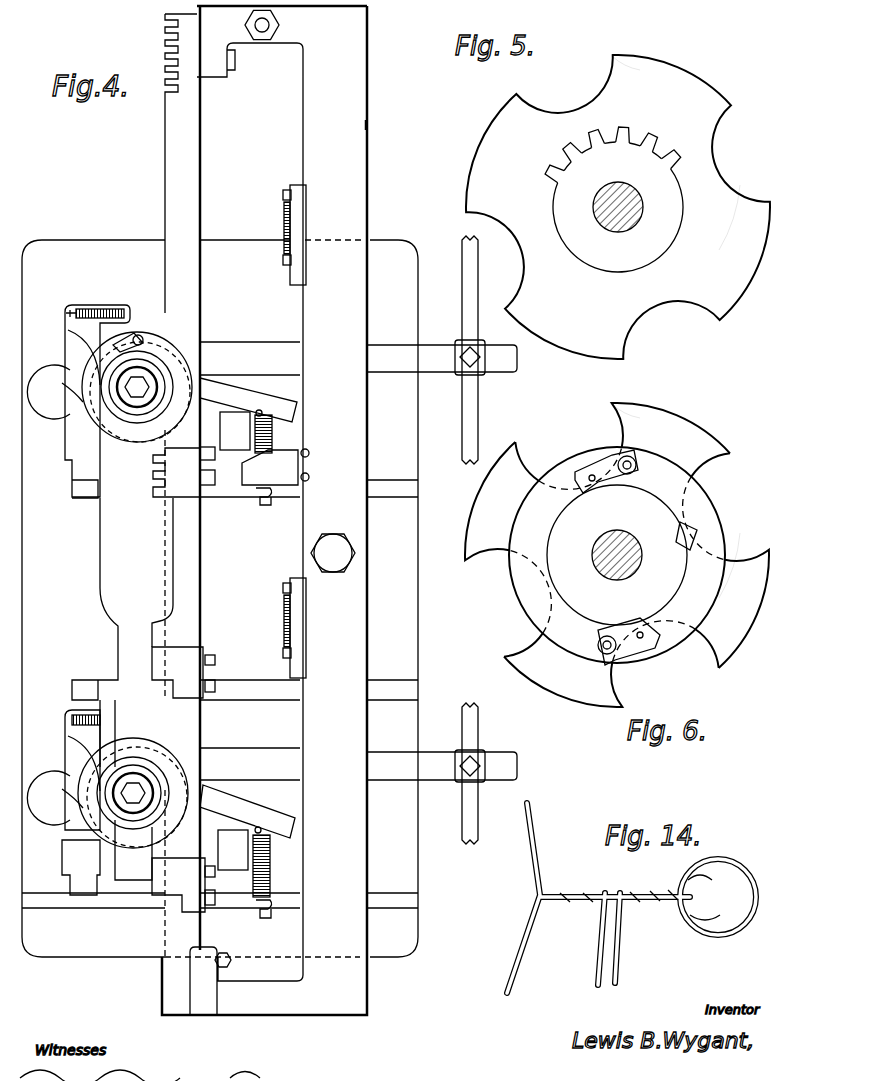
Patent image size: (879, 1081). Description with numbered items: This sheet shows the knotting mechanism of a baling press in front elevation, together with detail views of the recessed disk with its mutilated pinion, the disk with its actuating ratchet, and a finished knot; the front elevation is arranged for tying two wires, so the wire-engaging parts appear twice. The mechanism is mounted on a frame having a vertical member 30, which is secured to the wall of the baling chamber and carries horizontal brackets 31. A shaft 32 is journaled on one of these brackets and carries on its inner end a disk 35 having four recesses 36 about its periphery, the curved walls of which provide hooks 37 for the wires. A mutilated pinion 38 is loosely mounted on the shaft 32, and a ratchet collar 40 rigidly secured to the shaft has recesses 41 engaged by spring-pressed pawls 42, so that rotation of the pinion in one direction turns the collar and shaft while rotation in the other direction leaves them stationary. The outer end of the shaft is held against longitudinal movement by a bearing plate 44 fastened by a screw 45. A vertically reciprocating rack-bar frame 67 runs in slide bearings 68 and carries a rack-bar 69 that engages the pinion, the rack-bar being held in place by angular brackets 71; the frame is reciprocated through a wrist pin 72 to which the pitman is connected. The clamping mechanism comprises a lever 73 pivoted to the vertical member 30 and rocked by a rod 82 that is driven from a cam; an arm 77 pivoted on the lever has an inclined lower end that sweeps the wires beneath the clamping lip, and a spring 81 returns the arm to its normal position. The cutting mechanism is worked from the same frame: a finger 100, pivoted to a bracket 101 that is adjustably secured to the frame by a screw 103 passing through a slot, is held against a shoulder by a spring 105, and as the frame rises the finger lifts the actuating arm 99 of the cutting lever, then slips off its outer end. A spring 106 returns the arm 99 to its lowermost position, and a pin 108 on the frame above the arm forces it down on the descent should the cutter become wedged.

In FIG. 4, the vertical member 30 is at (398, 244).
In FIG. 4, the horizontal bracket 31 is at (288, 491).
In FIG. 5, the shaft 32 is at (620, 230).
In FIG. 6, the shaft 32 is at (608, 578).
In FIG. 4, the disk 35 is at (72, 380).
In FIG. 5, the disk 35 is at (717, 268).
In FIG. 6, the disk 35 is at (687, 437).
In FIG. 5, the recess 36 is at (722, 152).
In FIG. 6, the recess 36 is at (728, 515).
In FIG. 5, the hook 37 is at (620, 58).
In FIG. 6, the hook 37 is at (618, 410).
In FIG. 5, the mutilated pinion 38 is at (631, 153).
In FIG. 6, the ratchet collar 40 is at (663, 587).
In FIG. 6, the recess 41 is at (607, 492).
In FIG. 4, the spring-pressed pawl 42 is at (138, 334).
In FIG. 6, the spring-pressed pawl 42 is at (617, 486).
In FIG. 4, the bearing plate 44 is at (113, 397).
In FIG. 4, the screw 45 is at (140, 386).
In FIG. 4, the rack-bar frame 67 is at (369, 123).
In FIG. 4, the slide bearing 68 is at (200, 497).
In FIG. 4, the rack-bar 69 is at (165, 178).
In FIG. 4, the angular bracket 71 is at (292, 30).
In FIG. 4, the wrist pin 72 is at (338, 562).
In FIG. 4, the lever 73 is at (386, 350).
In FIG. 4, the arm 77 is at (65, 341).
In FIG. 4, the spring 81 is at (94, 308).
In FIG. 4, the rod 82 is at (480, 410).
In FIG. 4, the actuating arm 99 is at (265, 400).
In FIG. 4, the finger 100 is at (291, 188).
In FIG. 4, the bracket 101 is at (303, 224).
In FIG. 4, the screw 103 is at (283, 261).
In FIG. 4, the spring 105 is at (285, 223).
In FIG. 4, the spring 106 is at (273, 436).
In FIG. 4, the pin 108 is at (270, 31).